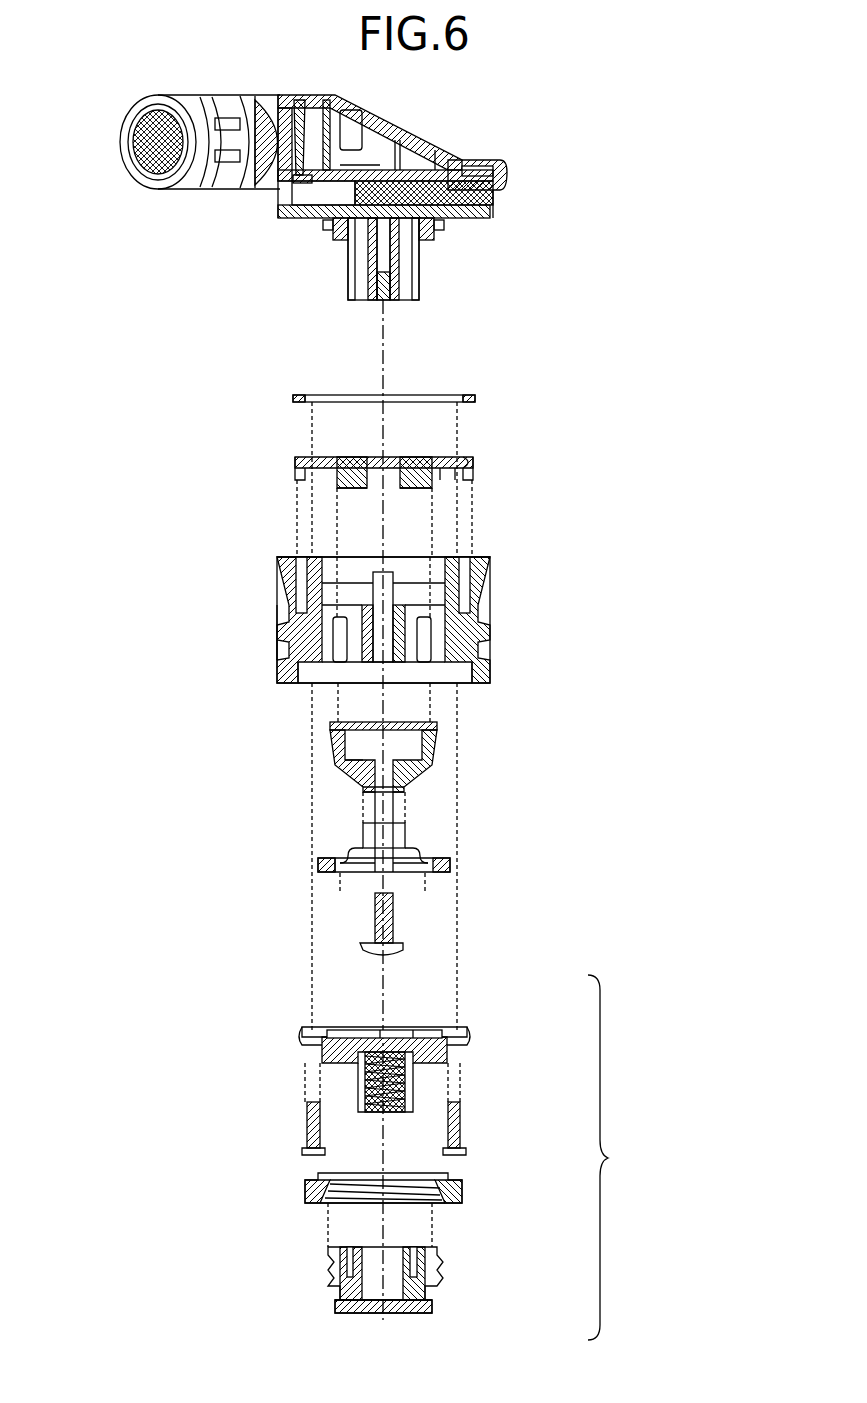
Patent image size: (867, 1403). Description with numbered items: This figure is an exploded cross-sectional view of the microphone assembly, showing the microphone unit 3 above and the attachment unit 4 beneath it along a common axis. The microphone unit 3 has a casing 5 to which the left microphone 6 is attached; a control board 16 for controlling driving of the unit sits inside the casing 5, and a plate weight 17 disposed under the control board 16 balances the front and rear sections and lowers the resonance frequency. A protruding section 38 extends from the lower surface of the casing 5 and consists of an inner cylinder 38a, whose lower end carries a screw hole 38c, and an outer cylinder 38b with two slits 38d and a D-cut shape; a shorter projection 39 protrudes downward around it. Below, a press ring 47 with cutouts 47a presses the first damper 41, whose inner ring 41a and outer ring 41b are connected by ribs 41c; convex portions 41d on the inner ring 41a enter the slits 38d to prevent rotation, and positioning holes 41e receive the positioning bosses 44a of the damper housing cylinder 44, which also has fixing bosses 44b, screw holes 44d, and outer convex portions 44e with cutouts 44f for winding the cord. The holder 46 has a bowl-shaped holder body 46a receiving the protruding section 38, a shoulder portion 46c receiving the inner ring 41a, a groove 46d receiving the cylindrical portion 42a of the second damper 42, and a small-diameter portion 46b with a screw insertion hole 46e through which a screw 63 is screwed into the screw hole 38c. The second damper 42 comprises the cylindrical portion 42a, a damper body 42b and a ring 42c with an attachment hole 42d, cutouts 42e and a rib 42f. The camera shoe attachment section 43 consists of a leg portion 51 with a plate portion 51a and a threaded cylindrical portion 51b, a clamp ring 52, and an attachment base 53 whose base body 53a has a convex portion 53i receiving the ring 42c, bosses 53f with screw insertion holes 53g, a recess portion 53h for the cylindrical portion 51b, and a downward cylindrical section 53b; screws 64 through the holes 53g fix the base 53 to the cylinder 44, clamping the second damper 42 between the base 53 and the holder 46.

The microphone unit 3 is at (512, 170).
The attachment unit 4 is at (555, 625).
The casing 5 is at (472, 165).
The left microphone 6 is at (118, 130).
The control board 16 is at (418, 172).
The plate weight 17 is at (470, 197).
The protruding section 38 is at (351, 288).
The inner cylinder 38a is at (405, 282).
The outer cylinder 38b is at (350, 250).
The screw hole 38c is at (388, 302).
The slits 38d is at (350, 282).
The projection 39 is at (323, 238).
The first damper 41 is at (348, 478).
The inner ring 41a is at (432, 457).
The outer ring 41b is at (474, 466).
The ribs 41c is at (445, 475).
The convex portions 41d is at (355, 488).
The positioning hole 41e is at (462, 478).
The second damper 42 is at (361, 858).
The cylindrical portion 42a is at (405, 835).
The damper body 42b is at (420, 856).
The ring 42c is at (343, 873).
The attachment hole 42d is at (420, 875).
The cutouts 42e is at (450, 866).
The rib 42f is at (320, 875).
The camera shoe attachment section 43 is at (613, 1157).
The damper housing cylinder 44 is at (348, 613).
The positioning bosses 44a is at (303, 556).
The fixing bosses 44b is at (390, 582).
The screw hole 44d is at (310, 678).
The convex portions 44e is at (295, 645).
The cutout 44f is at (285, 655).
The holder 46 is at (359, 751).
The holder body 46a is at (438, 745).
The small-diameter portion 46b is at (404, 790).
The shoulder portion 46c is at (410, 722).
The groove 46d is at (360, 785).
The screw insertion hole 46e is at (394, 800).
The press ring 47 is at (389, 383).
The cutouts 47a is at (312, 394).
The leg portion 51 is at (395, 1274).
The plate portion 51a is at (336, 1305).
The cylindrical portion 51b is at (330, 1258).
The clamp ring 52 is at (464, 1190).
The attachment base 53 is at (385, 1066).
The base body 53a is at (470, 1034).
The cylindrical section 53b is at (402, 1112).
The bosses 53f is at (328, 1030).
The screw insertion hole 53g is at (306, 1028).
The recess portion 53h is at (345, 1063).
The convex portion 53i is at (385, 1030).
The screw 63 is at (400, 953).
The screw 64 is at (306, 1125).